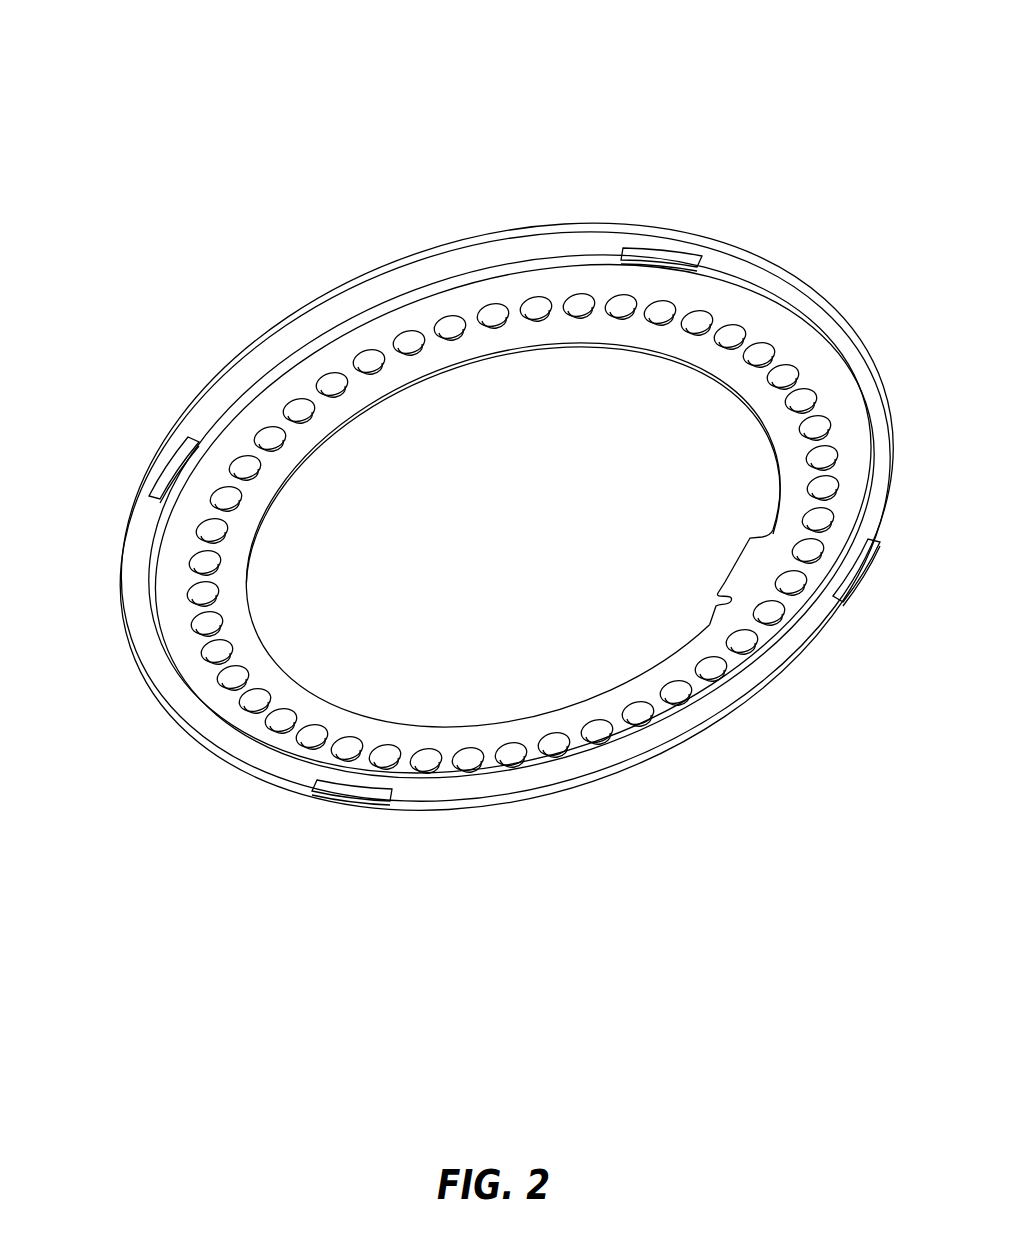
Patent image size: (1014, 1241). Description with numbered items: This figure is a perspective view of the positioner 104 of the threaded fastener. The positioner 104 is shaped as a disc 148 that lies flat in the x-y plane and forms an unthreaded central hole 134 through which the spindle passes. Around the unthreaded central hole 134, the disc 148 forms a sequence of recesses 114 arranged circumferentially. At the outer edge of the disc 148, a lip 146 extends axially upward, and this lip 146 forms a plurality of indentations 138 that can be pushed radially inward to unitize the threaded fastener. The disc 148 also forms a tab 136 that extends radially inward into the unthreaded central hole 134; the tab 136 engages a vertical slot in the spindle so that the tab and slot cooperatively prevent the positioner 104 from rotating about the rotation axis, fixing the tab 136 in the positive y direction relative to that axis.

The positioner 104 is at (116, 68).
The recesses 114 is at (387, 752).
The unthreaded central hole 134 is at (518, 548).
The tab 136 is at (735, 568).
The indentations 138 is at (664, 236).
The lip 146 is at (262, 336).
The disc 148 is at (242, 548).